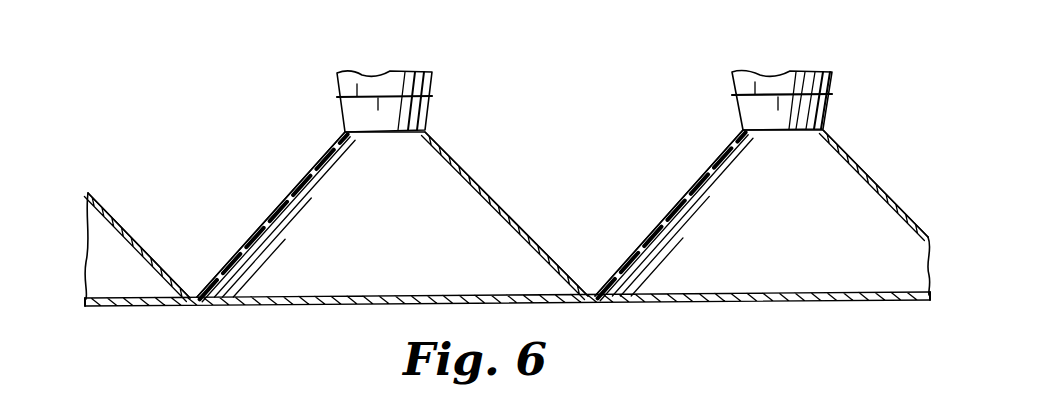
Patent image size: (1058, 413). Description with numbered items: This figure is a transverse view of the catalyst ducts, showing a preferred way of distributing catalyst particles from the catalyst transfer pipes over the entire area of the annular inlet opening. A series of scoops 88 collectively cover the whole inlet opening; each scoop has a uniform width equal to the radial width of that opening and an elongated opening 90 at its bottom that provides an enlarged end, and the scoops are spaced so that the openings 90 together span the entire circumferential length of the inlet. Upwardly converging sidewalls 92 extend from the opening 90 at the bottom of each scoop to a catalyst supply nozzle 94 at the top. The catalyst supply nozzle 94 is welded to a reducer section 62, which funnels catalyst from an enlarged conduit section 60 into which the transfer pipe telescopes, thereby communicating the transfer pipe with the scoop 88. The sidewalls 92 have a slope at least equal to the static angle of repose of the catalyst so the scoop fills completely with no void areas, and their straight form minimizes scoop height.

The enlarged conduit section 60 is at (433, 77).
The reducer section 62 is at (833, 103).
The scoops 88 is at (489, 151).
The elongated opening 90 is at (680, 304).
The upwardly converging sidewalls 92 is at (505, 205).
The catalyst supply nozzle 94 is at (816, 126).